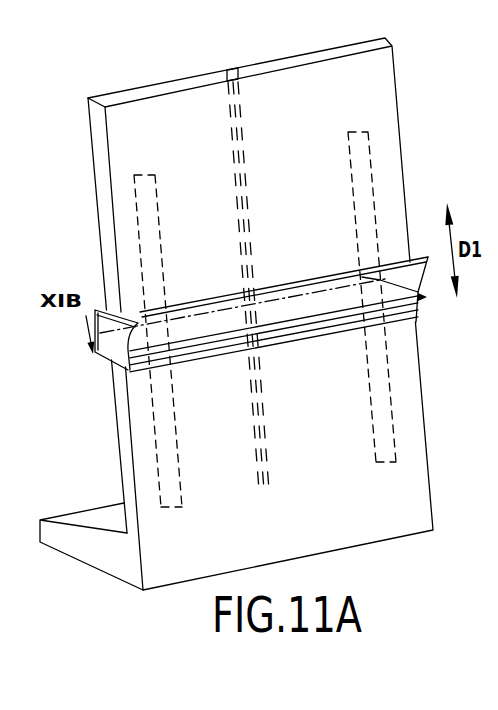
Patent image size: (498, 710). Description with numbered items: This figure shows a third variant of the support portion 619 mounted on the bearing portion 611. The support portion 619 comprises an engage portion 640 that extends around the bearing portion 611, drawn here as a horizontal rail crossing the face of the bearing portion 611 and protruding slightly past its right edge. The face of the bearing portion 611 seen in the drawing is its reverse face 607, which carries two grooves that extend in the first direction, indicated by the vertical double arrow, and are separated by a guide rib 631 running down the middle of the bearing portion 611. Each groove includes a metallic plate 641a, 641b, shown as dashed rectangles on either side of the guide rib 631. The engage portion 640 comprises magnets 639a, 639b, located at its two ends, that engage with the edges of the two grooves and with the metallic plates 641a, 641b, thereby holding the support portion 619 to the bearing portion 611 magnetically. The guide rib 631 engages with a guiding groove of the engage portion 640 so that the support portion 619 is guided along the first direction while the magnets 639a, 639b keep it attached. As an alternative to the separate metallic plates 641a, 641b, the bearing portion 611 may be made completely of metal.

The reverse face 607 is at (89, 211).
The bearing portion 611 is at (383, 112).
The support portion 619 is at (201, 314).
The guide rib 631 is at (228, 74).
The magnet 639a is at (183, 345).
The magnet 639b is at (352, 284).
The engage portion 640 is at (300, 339).
The metallic plate 641a is at (157, 211).
The metallic plate 641b is at (368, 171).